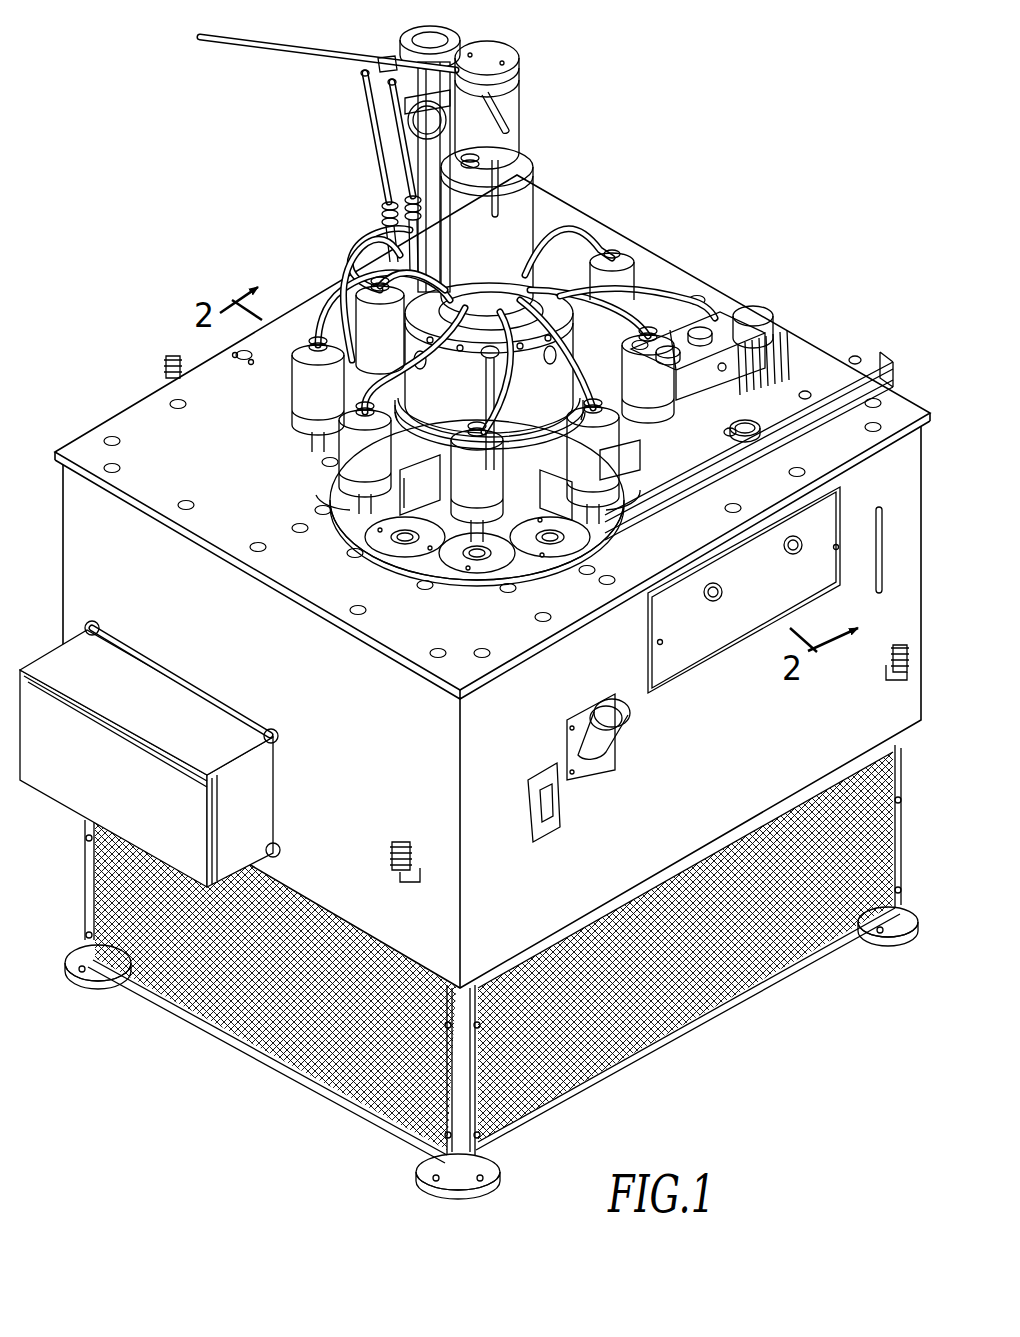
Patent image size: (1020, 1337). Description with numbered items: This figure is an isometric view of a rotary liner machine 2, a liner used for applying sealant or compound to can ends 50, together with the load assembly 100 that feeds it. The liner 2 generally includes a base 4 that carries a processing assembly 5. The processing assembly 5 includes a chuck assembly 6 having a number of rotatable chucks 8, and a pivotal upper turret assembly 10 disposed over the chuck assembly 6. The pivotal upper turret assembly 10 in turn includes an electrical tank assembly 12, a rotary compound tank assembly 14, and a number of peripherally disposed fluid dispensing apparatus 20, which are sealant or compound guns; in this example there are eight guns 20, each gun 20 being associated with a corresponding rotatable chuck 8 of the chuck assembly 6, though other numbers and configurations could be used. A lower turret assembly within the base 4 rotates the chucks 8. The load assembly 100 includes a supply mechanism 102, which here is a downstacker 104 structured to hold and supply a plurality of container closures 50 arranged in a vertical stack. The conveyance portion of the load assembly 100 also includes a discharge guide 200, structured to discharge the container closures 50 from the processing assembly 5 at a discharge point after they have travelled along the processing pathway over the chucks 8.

The load assembly 100 is at (742, 167).
The liner machine 2 is at (740, 1082).
The base 4 is at (88, 562).
The processing assembly 5 is at (296, 490).
The chuck assembly 6 is at (492, 604).
The rotatable chucks 8 is at (344, 500).
The pivotal upper turret assembly 10 is at (326, 240).
The electrical tank assembly 12 is at (586, 224).
The rotary compound tank assembly 14 is at (540, 125).
The fluid dispensing apparatus 20 is at (333, 422).
The can ends 50 is at (768, 416).
The supply mechanism 102 is at (376, 110).
The downstacker 104 is at (398, 163).
The discharge guide 200 is at (746, 432).